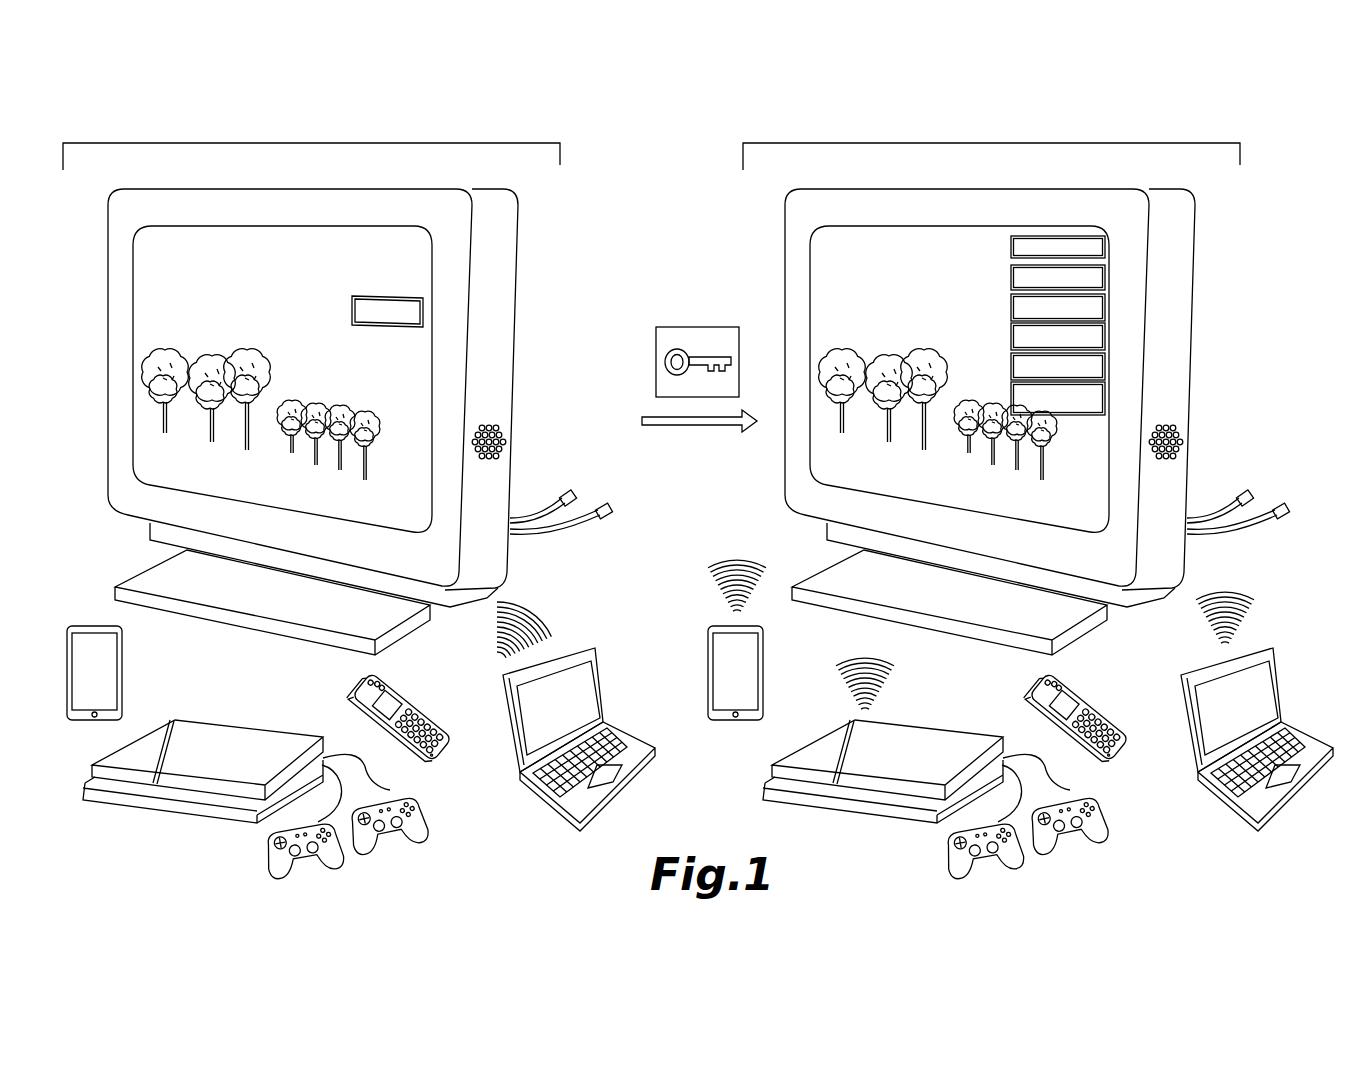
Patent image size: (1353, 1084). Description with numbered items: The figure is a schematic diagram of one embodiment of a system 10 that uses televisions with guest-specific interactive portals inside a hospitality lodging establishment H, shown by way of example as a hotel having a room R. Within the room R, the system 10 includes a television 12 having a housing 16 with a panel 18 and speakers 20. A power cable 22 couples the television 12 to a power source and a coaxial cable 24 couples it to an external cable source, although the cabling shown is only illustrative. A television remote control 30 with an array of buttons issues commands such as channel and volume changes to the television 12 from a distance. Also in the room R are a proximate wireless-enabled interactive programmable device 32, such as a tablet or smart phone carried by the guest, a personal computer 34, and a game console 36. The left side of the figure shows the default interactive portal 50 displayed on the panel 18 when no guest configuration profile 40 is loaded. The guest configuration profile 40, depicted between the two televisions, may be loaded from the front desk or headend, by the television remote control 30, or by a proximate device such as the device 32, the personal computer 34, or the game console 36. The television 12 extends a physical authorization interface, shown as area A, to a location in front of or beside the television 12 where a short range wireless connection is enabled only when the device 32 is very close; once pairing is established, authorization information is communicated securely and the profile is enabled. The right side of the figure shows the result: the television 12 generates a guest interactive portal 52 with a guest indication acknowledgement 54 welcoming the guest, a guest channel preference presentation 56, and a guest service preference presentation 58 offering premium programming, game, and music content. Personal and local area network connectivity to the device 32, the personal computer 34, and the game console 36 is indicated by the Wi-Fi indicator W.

The system 10 is at (600, 177).
The television 12 is at (522, 298).
The housing 16 is at (493, 393).
The panel 18 is at (343, 248).
The speakers 20 is at (502, 442).
The power cable 22 is at (546, 506).
The coaxial cable 24 is at (553, 533).
The television remote control 30 is at (418, 700).
The proximate wireless-enabled interactive programmable device 32 is at (128, 660).
The personal computer 34 is at (532, 790).
The game console 36 is at (242, 727).
The guest configuration profile 40 is at (690, 335).
The default interactive portal 50 is at (150, 305).
The guest interactive portal 52 is at (980, 338).
The guest indication acknowledgement 54 is at (888, 250).
The guest channel preference presentation 56 is at (1128, 320).
The guest service preference presentation 58 is at (1097, 345).
The hospitality lodging establishment H is at (562, 135).
The room R is at (454, 163).
The physical authorization interface area A is at (530, 630).
The Wi-Fi indicator W is at (757, 560).